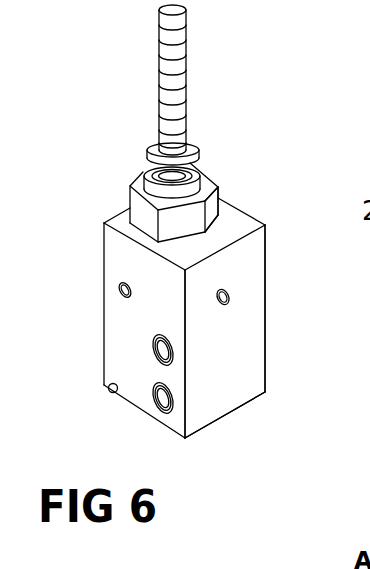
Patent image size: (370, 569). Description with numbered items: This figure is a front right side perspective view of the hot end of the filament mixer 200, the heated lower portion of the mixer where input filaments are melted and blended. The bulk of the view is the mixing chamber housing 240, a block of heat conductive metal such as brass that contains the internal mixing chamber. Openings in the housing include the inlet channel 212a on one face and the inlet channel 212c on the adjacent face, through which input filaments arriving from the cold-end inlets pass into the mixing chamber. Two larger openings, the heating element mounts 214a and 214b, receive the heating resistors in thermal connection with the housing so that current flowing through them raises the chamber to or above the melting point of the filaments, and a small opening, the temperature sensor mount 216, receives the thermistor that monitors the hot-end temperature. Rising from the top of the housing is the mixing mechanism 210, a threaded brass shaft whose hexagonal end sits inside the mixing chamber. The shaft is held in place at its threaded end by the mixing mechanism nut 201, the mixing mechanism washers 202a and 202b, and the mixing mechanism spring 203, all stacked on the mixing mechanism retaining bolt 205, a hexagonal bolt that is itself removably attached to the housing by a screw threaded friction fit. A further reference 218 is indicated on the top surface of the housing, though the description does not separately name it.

The filament mixer 200 is at (237, 80).
The mixing mechanism 210 is at (167, 53).
The mixing mechanism nut 201 is at (160, 150).
The mixing mechanism washer 202a is at (198, 153).
The mixing mechanism washer 202b is at (203, 186).
The mixing mechanism spring 203 is at (142, 172).
The mixing mechanism retaining bolt 205 is at (208, 208).
The top surface of body 218 is at (227, 267).
The mixing chamber housing 240 is at (245, 330).
The inlet channel 212a is at (230, 297).
The inlet channel 212c is at (118, 284).
The temperature sensor mount 216 is at (108, 387).
The heating element mount 214a is at (157, 365).
The heating element mount 214b is at (163, 412).